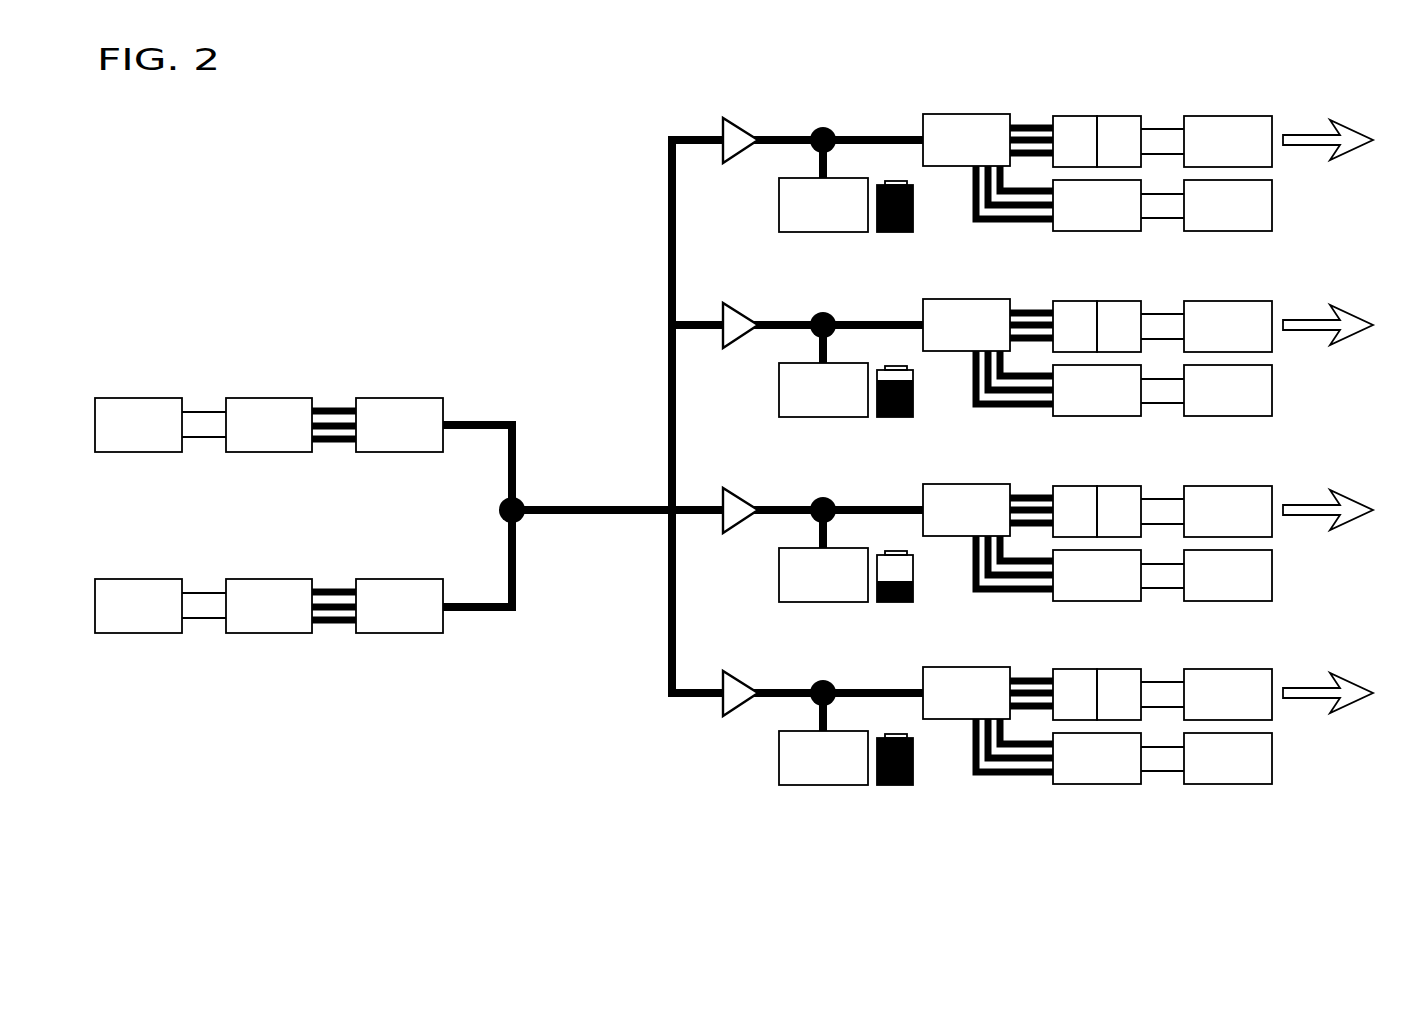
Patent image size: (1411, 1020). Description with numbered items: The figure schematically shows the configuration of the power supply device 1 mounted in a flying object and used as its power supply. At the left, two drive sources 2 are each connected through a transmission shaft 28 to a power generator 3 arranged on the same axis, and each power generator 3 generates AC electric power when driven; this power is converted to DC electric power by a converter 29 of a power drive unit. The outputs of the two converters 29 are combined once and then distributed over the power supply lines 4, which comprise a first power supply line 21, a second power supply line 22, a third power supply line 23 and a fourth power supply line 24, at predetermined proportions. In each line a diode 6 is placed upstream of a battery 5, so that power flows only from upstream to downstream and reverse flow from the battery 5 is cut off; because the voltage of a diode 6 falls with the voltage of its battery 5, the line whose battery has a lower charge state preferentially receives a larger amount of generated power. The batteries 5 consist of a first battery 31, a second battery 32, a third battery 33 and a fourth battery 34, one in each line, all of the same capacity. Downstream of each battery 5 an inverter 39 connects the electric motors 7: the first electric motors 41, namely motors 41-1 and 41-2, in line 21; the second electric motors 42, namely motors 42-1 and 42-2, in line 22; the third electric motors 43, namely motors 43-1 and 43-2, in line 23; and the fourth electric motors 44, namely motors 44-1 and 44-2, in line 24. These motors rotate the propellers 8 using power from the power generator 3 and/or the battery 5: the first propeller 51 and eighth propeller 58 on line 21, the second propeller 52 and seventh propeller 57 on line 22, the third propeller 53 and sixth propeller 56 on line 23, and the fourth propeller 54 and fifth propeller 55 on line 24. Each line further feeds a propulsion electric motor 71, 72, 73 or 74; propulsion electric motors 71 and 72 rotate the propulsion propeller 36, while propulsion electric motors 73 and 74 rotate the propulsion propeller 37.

The power supply device 1 is at (409, 157).
The drive source 2 is at (140, 397).
The transmission shaft 28 is at (203, 410).
The power generator 3 is at (270, 397).
The converter 29 is at (400, 397).
The power supply line 4 is at (877, 122).
The battery 5 is at (800, 170).
The diode 6 is at (743, 125).
The electric motor 7 is at (1098, 93).
The propeller 8 is at (1264, 103).
The first power supply line 21 is at (693, 137).
The second power supply line 22 is at (797, 293).
The third power supply line 23 is at (797, 478).
The fourth power supply line 24 is at (797, 661).
The first battery 31 is at (822, 232).
The second battery 32 is at (846, 396).
The third battery 33 is at (846, 581).
The fourth battery 34 is at (846, 764).
The inverter 39 is at (965, 113).
The first electric motor 41 is at (1098, 112).
The first electric motor 41-1 is at (1077, 116).
The first electric motor 41-2 is at (1120, 116).
The second electric motor 42 is at (1098, 297).
The second electric motor 42-1 is at (1046, 309).
The second electric motor 42-2 is at (1149, 309).
The third electric motor 43 is at (1098, 482).
The third electric motor 43-1 is at (1046, 494).
The third electric motor 43-2 is at (1149, 494).
The fourth electric motor 44 is at (1098, 665).
The fourth electric motor 44-1 is at (1046, 677).
The fourth electric motor 44-2 is at (1149, 677).
The first propeller 51 is at (1264, 124).
The second propeller 52 is at (1253, 309).
The third propeller 53 is at (1253, 494).
The fourth propeller 54 is at (1253, 677).
The fifth propeller 55 is at (1253, 677).
The sixth propeller 56 is at (1253, 494).
The seventh propeller 57 is at (1253, 309).
The eighth propeller 58 is at (1248, 116).
The propulsion electric motor 71 is at (1100, 231).
The propulsion electric motor 72 is at (1100, 408).
The propulsion electric motor 73 is at (1100, 593).
The propulsion electric motor 74 is at (1100, 776).
The propulsion propeller 36 is at (1227, 231).
The propulsion propeller 37 is at (1232, 685).